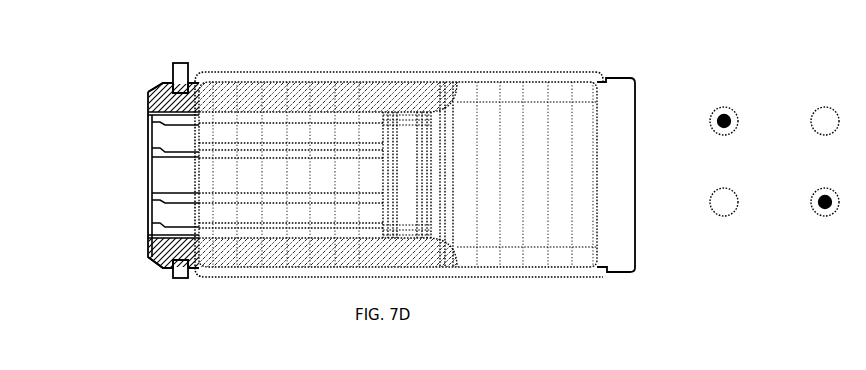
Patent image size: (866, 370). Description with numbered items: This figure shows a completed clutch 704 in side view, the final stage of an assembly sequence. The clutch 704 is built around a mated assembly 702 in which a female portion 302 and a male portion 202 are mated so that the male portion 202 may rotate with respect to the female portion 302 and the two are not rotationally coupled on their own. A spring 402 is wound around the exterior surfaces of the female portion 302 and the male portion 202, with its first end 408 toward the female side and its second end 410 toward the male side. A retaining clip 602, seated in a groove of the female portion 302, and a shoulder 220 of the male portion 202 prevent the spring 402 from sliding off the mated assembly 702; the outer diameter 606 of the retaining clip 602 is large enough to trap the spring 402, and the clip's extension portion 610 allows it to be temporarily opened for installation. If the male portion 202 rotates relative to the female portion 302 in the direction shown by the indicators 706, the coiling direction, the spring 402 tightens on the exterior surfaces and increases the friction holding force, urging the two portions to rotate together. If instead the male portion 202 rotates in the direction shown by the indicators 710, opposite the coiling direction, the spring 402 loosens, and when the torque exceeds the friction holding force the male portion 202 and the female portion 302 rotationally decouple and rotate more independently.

The male portion 202 is at (626, 88).
The shoulder 220 is at (627, 56).
The female portion 302 is at (160, 78).
The spring 402 is at (330, 32).
The first end 408 is at (265, 55).
The second end 410 is at (545, 52).
The retaining clip 602 is at (175, 58).
The outer diameter 606 is at (807, 87).
The extension portion 610 is at (708, 87).
The mated assembly 702 is at (425, 52).
The clutch 704 is at (97, 80).
The indicators 706 is at (483, 148).
The indicators 710 is at (563, 217).